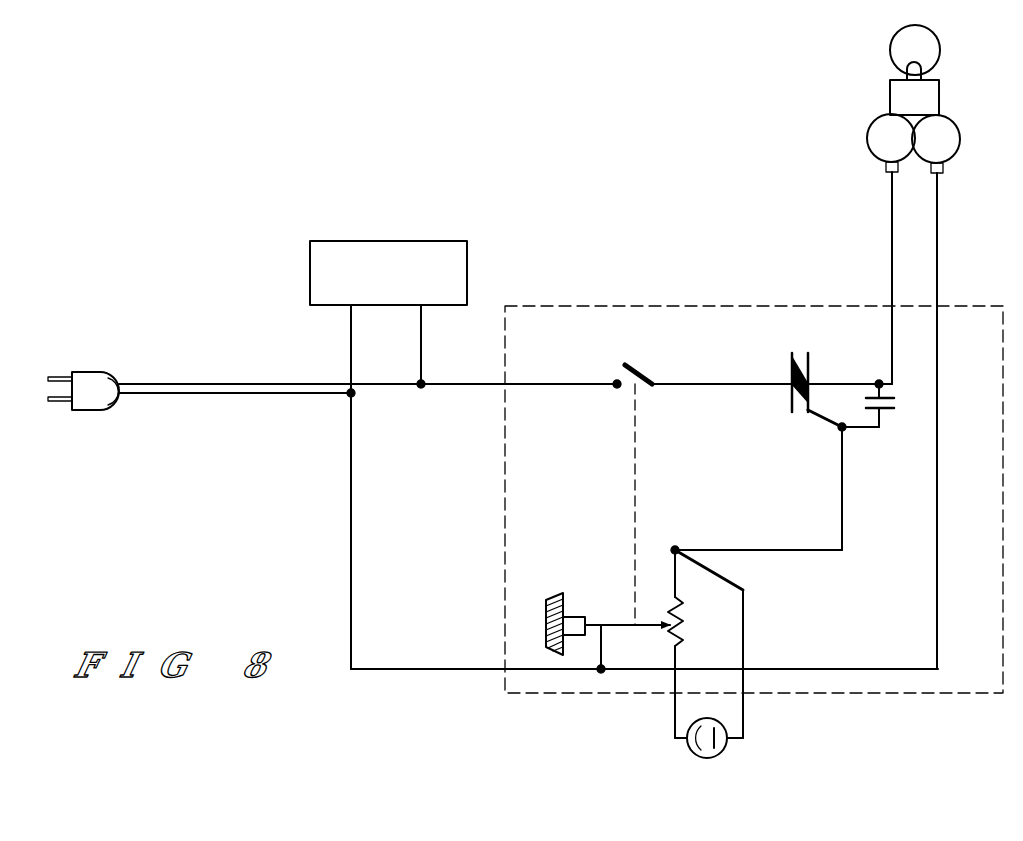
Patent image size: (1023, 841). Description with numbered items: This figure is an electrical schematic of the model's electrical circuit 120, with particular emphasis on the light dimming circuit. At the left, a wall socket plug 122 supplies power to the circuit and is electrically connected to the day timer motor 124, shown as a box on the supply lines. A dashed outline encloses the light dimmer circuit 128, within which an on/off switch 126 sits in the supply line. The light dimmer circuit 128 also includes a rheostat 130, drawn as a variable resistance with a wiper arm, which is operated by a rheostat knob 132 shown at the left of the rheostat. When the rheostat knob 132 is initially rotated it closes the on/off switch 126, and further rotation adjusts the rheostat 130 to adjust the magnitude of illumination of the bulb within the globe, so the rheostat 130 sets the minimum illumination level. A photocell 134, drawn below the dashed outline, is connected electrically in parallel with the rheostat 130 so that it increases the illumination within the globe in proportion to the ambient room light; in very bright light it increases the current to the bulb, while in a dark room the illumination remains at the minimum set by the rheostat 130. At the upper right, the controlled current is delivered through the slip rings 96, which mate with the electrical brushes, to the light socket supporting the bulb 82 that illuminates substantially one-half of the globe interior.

The bulb 82 is at (940, 46).
The slip rings 96 is at (918, 140).
The electrical circuit 120 is at (340, 502).
The wall socket plug 122 is at (103, 410).
The day timer motor 124 is at (467, 266).
The on/off switch 126 is at (642, 375).
The light dimmer circuit 128 is at (651, 304).
The rheostat 130 is at (685, 619).
The rheostat knob 132 is at (550, 595).
The photocell 134 is at (727, 745).